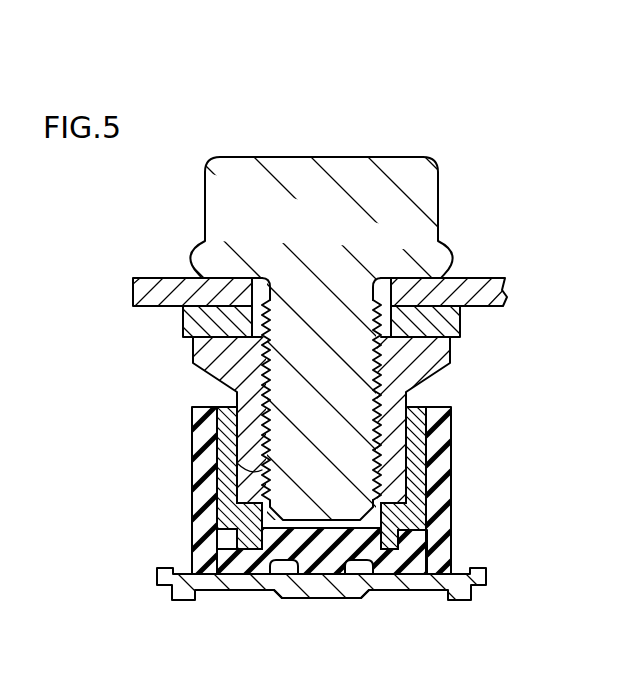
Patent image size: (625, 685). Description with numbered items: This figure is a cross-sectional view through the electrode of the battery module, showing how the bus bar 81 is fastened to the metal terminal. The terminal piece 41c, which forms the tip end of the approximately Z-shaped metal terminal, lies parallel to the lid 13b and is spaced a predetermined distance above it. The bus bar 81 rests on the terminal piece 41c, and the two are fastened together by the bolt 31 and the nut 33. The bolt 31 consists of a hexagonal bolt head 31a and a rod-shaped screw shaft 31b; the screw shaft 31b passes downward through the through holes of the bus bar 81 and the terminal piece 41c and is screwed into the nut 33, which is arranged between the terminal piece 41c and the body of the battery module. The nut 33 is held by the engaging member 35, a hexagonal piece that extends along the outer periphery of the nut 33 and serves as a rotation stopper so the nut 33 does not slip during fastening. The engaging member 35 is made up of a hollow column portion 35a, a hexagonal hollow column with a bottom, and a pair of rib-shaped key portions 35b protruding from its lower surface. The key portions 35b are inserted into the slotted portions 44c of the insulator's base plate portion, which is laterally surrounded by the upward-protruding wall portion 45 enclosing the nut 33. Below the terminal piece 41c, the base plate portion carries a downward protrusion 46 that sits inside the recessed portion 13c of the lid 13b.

The bolt 31 is at (373, 338).
The bolt head 31a is at (420, 198).
The screw shaft 31b is at (323, 362).
The bus bar 81 is at (500, 292).
The terminal piece 41c is at (195, 322).
The nut 33 is at (428, 355).
The wall portion 45 is at (203, 432).
The engaging member 35 is at (386, 479).
The hollow column portion 35a is at (412, 468).
The key portion 35b is at (420, 531).
The protrusion 46 is at (323, 575).
The lid 13b is at (410, 582).
The recessed portion 13c is at (291, 597).
The slotted portion 44c is at (232, 548).